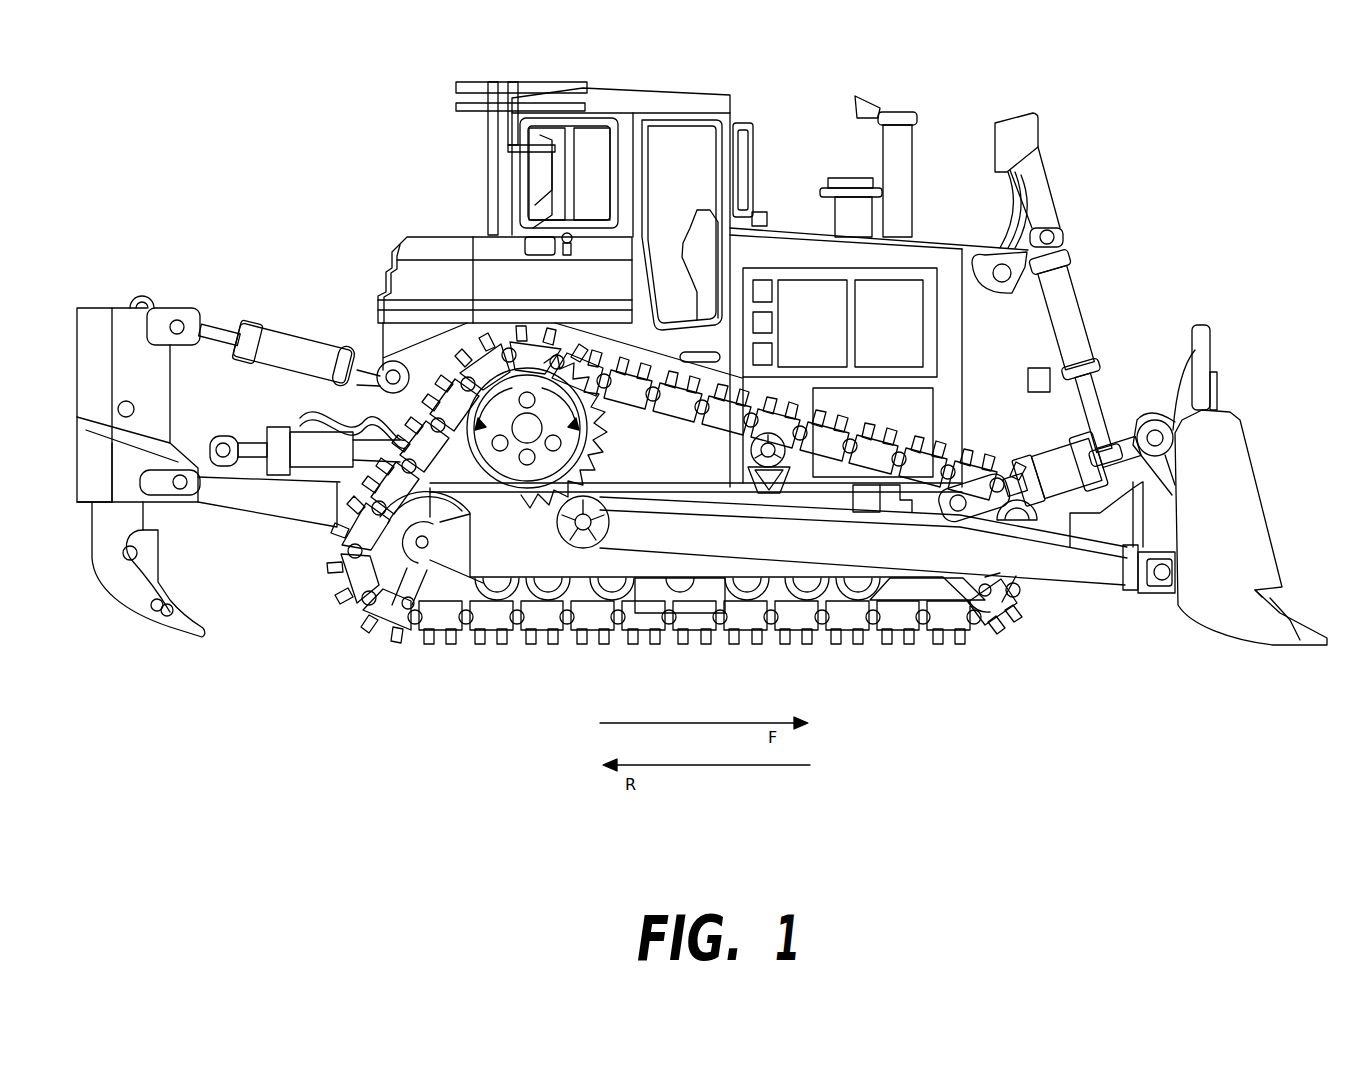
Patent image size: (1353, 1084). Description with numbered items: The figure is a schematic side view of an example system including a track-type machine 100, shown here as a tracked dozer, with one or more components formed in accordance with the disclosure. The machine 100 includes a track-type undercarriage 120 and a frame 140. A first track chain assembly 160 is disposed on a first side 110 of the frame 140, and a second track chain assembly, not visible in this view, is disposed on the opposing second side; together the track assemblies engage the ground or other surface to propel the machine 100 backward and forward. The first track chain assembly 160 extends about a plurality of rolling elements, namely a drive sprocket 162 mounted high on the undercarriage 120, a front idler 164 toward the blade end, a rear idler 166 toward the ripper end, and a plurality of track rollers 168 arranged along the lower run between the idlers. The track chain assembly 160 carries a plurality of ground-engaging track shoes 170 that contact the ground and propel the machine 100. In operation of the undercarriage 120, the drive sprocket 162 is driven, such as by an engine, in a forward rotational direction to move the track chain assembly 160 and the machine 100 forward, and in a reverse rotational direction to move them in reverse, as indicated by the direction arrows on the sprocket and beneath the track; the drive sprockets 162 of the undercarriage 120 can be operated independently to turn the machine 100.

The track-type machine 100 is at (1172, 128).
The first side 110 is at (431, 289).
The track-type undercarriage 120 is at (1038, 624).
The frame 140 is at (998, 358).
The first track chain assembly 160 is at (517, 646).
The drive sprocket 162 is at (487, 453).
The front idler 164 is at (970, 582).
The rear idler 166 is at (400, 567).
The track rollers 168 is at (735, 619).
The ground-engaging track shoes 170 is at (827, 642).